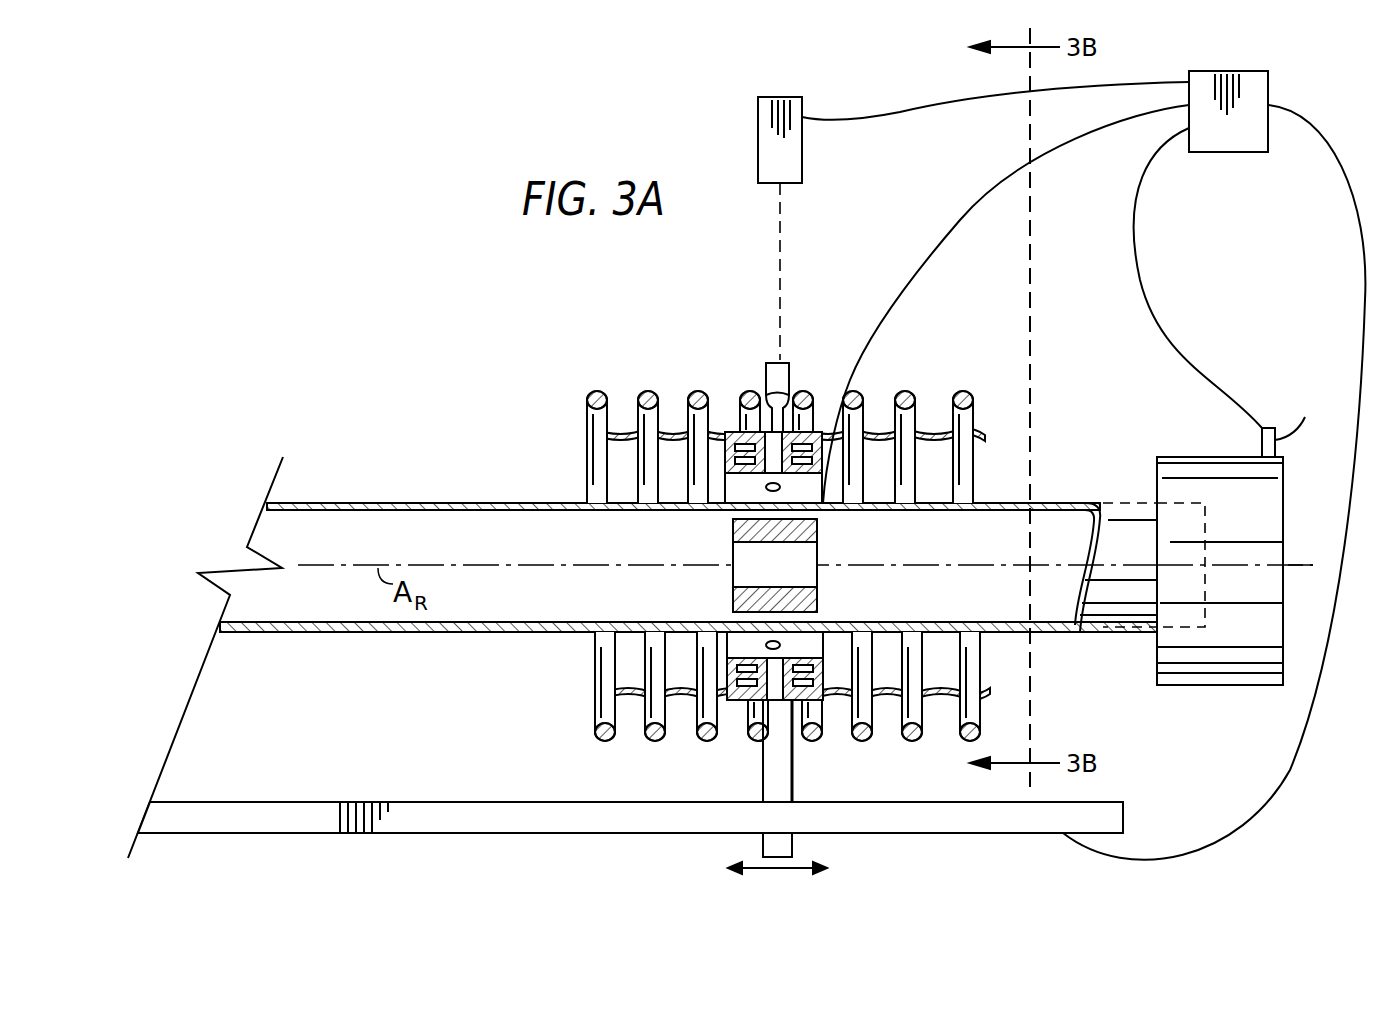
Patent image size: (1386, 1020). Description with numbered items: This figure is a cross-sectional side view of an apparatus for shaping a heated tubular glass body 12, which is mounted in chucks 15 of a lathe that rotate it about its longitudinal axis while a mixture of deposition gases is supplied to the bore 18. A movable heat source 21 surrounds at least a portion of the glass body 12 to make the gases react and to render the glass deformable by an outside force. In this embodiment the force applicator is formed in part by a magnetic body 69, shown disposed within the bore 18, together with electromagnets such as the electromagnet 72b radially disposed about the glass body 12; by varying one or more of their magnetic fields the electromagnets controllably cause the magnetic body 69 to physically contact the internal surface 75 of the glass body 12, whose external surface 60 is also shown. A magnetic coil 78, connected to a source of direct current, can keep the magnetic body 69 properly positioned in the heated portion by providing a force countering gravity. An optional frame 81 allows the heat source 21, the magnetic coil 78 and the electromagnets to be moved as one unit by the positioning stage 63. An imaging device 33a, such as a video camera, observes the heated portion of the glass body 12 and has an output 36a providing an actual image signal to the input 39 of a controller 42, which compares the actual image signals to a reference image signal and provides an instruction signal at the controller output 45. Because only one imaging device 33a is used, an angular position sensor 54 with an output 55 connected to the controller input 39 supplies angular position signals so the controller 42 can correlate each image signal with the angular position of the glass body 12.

The glass body 12 is at (457, 480).
The chucks 15 is at (1195, 457).
The bore 18 is at (512, 530).
The heat source 21 is at (738, 440).
The imaging device 33a is at (758, 135).
The output 36a is at (811, 104).
The input 39 is at (1184, 82).
The controller 42 is at (1222, 155).
The controller output 45 is at (1276, 101).
The angular position sensor 54 is at (1303, 414).
The output 55 is at (1262, 428).
The external surface 60 is at (1058, 512).
The positioning stage 63 is at (875, 819).
The magnetic body 69 is at (820, 534).
The electromagnet 72b is at (788, 366).
The internal surface 75 is at (1046, 510).
The magnetic coil 78 is at (980, 432).
The frame 81 is at (790, 765).